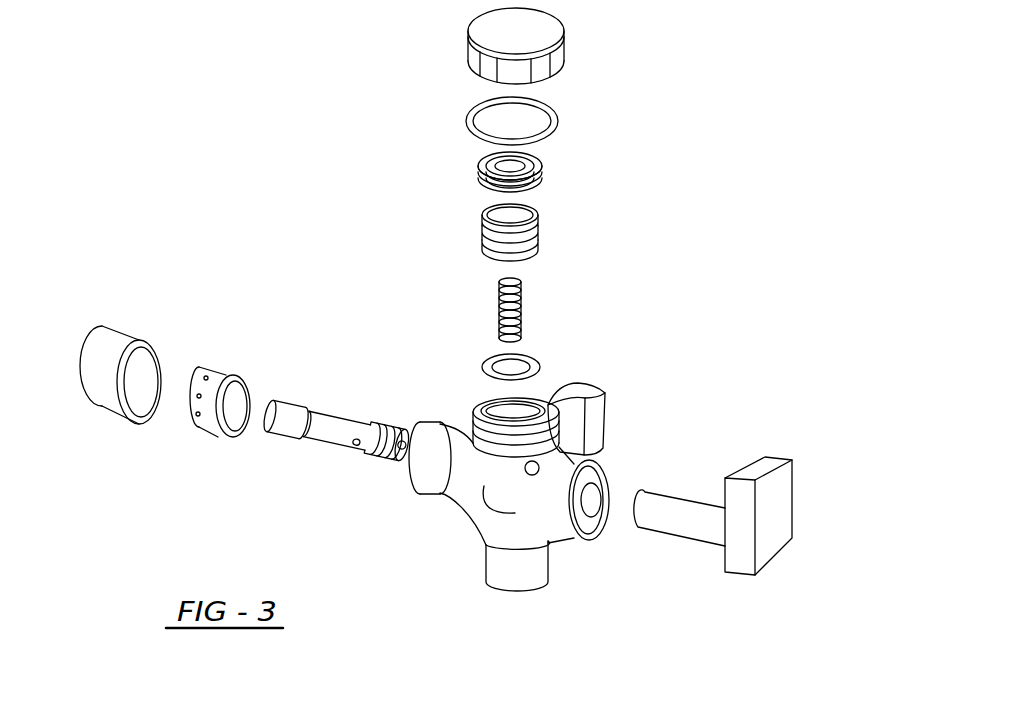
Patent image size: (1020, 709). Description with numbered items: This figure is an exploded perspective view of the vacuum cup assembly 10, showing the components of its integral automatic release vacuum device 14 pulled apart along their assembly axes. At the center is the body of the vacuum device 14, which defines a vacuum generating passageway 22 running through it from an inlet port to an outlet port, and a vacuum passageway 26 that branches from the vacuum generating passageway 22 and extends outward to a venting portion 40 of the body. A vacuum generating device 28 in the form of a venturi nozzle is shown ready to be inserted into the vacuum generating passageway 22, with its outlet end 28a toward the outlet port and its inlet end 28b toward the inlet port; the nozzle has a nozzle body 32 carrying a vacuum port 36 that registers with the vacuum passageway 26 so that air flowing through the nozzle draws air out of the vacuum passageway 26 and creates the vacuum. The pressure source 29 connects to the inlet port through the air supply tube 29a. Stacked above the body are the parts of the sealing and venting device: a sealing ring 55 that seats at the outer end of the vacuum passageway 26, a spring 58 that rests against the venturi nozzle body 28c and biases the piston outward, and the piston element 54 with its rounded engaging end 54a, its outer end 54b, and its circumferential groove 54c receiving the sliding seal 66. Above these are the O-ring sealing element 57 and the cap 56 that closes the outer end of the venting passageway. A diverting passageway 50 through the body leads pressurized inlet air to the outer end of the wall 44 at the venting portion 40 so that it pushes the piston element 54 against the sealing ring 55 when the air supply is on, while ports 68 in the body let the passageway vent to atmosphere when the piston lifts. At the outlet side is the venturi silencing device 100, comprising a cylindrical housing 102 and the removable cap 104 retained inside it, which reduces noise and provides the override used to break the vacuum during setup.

The vacuum cup assembly 10 is at (275, 222).
The vacuum device 14 is at (637, 410).
The vacuum generating passageway 22 is at (590, 500).
The vacuum passageway 26 is at (490, 406).
The vacuum generating device 28 is at (332, 378).
The outlet end 28a is at (271, 402).
The inlet end 28b is at (398, 433).
The venturi nozzle body 28c is at (328, 433).
The pressure source 29 is at (763, 558).
The air supply tube 29a is at (702, 528).
The nozzle body 32 is at (300, 444).
The vacuum port 36 is at (357, 444).
The venting portion 40 is at (562, 441).
The wall 44 is at (550, 410).
The diverting passageway 50 is at (590, 400).
The piston element 54 is at (460, 222).
The engaging end 54a is at (528, 262).
The outer end 54b is at (528, 215).
The groove 54c is at (540, 243).
The sealing ring 55 is at (540, 362).
The cap 56 is at (547, 35).
The sealing element 57 is at (555, 115).
The spring 58 is at (522, 305).
The sliding seal 66 is at (540, 163).
The ports 68 is at (478, 512).
The venturi silencing device 100 is at (162, 430).
The housing 102 is at (123, 325).
The removable cap 104 is at (223, 360).